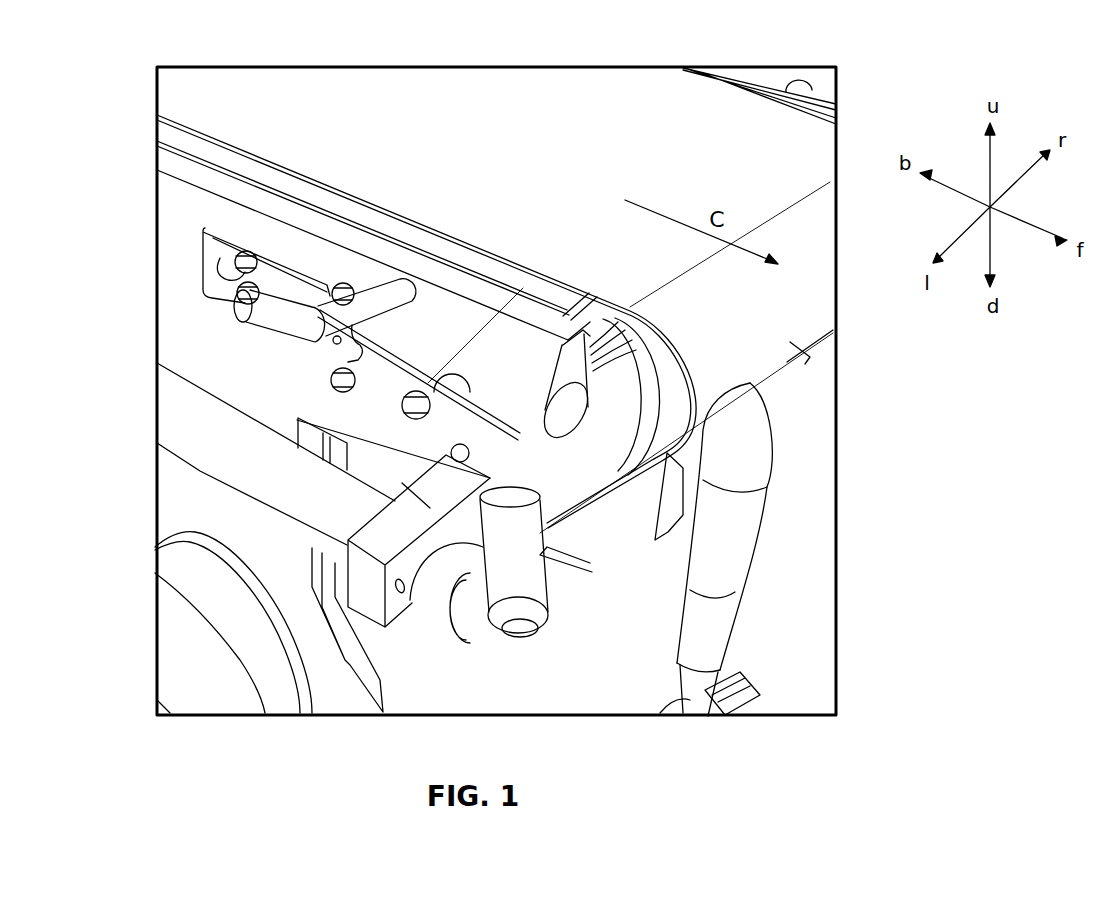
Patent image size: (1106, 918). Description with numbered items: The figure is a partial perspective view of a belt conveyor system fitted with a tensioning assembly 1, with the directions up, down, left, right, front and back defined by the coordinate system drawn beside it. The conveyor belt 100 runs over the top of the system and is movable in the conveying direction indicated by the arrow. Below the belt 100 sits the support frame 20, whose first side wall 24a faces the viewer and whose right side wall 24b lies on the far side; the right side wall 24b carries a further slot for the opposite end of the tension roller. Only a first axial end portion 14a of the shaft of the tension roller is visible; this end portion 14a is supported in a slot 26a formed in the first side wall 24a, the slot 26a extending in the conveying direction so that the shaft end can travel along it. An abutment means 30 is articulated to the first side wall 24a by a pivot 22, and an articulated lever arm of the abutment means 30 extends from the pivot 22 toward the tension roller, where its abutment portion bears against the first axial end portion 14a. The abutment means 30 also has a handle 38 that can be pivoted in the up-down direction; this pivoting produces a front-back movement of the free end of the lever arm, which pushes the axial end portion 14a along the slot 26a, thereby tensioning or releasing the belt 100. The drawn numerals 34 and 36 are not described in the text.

The tensioning assembly 1 is at (381, 727).
The belt 100 is at (600, 80).
The first axial end portion 14a is at (258, 285).
The support frame 20 is at (563, 470).
The pivot 22 is at (520, 298).
The first side wall 24a is at (686, 451).
The right side wall 24b is at (820, 86).
The slot 26a is at (224, 257).
The abutment means 30 is at (470, 292).
The rod 34 is at (340, 310).
The clamp 36 is at (302, 312).
The handle 38 is at (520, 648).